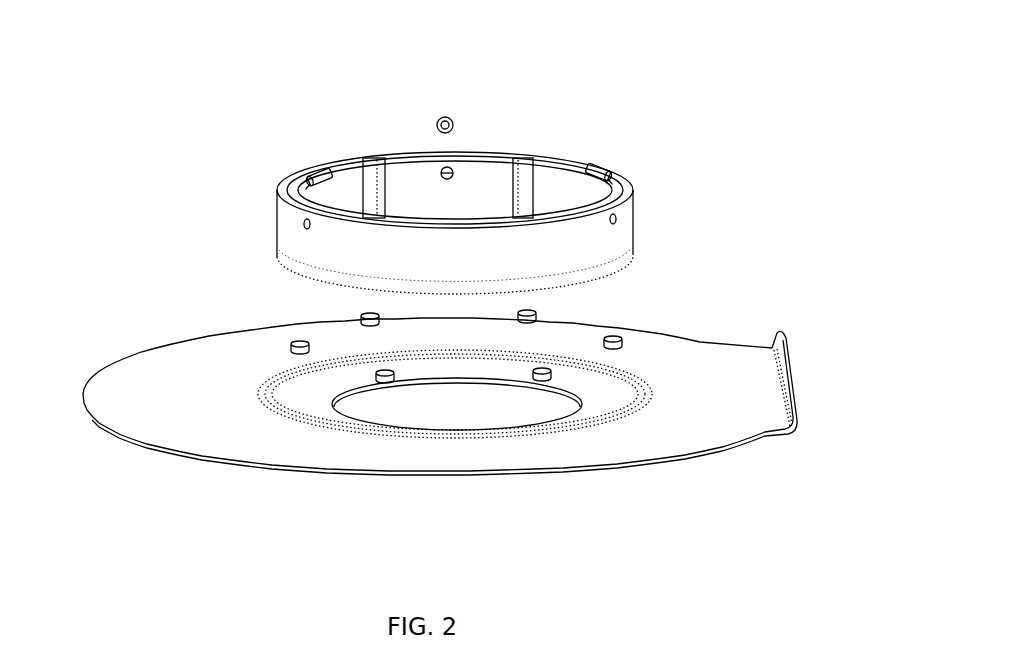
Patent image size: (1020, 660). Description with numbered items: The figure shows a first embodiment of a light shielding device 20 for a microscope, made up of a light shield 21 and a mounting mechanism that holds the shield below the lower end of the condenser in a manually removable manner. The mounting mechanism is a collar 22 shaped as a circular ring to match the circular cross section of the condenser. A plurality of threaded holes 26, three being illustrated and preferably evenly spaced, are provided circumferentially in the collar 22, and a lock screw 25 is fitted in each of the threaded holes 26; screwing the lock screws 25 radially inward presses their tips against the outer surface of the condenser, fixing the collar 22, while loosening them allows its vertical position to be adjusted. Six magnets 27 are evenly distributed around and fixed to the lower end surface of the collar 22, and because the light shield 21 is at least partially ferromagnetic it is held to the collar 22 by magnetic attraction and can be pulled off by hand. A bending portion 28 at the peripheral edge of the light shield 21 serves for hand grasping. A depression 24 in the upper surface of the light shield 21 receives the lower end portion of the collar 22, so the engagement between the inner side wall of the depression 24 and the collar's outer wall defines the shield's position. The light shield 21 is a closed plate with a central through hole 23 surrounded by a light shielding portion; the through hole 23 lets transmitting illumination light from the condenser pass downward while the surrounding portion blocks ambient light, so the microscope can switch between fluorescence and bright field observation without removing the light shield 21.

The light shielding device 20 is at (162, 118).
The light shield 21 is at (197, 380).
The collar 22 is at (328, 258).
The through hole 23 is at (415, 412).
The depression 24 is at (305, 402).
The lock screw 25 is at (327, 177).
The threaded holes 26 is at (300, 224).
The magnets 27 is at (537, 315).
The bending portion 28 is at (780, 348).